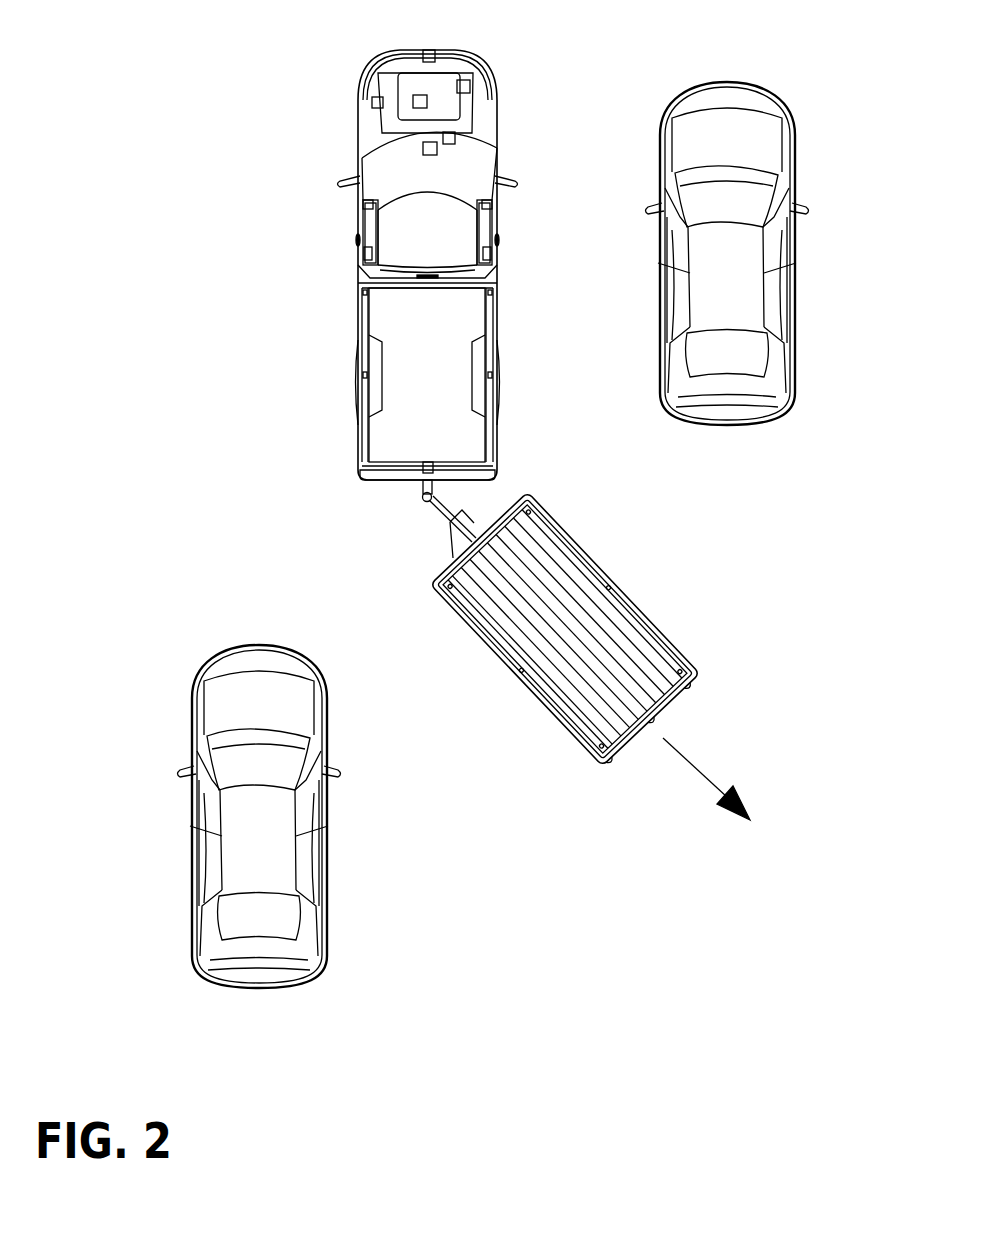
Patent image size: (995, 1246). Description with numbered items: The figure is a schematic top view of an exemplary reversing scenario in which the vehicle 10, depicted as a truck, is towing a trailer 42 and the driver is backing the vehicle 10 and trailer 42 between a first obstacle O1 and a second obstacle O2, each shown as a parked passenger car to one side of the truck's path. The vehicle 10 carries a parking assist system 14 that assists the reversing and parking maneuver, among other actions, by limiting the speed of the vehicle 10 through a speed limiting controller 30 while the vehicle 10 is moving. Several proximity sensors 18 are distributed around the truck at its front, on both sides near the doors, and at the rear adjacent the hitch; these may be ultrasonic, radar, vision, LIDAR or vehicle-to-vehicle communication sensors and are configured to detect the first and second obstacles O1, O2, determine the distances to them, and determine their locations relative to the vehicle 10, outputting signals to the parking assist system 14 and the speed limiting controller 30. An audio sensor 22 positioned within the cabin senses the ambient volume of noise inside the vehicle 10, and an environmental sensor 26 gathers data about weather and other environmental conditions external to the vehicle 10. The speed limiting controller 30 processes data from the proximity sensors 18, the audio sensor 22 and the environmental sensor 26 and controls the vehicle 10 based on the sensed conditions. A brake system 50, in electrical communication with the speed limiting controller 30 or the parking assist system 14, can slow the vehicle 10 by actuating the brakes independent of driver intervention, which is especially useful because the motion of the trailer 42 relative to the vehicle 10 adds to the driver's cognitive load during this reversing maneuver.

The vehicle 10 is at (352, 93).
The parking assist system 14 is at (373, 103).
The proximity sensors 18 is at (427, 50).
The audio sensor 22 is at (417, 97).
The environmental sensor 26 is at (427, 147).
The speed limiting controller 30 is at (463, 80).
The brake system 50 is at (449, 135).
The trailer 42 is at (583, 700).
The first obstacle O1 is at (750, 268).
The second obstacle O2 is at (290, 813).